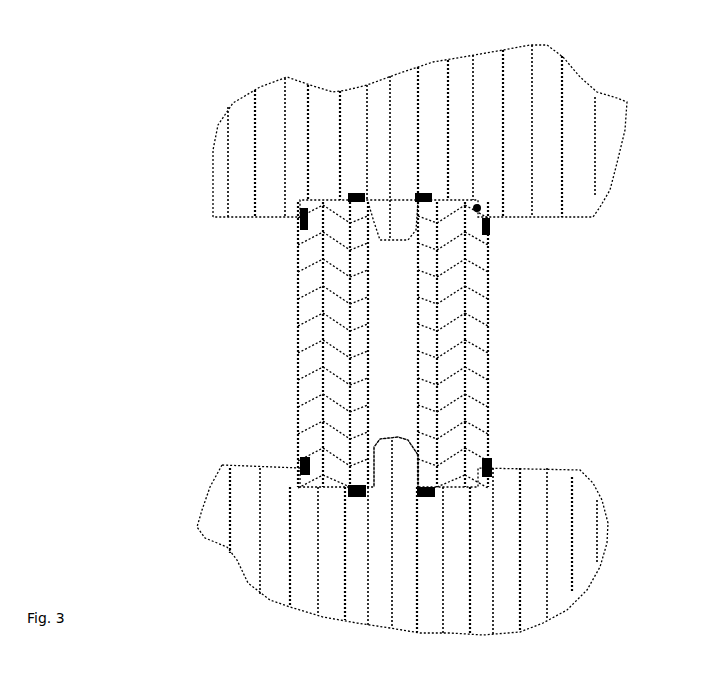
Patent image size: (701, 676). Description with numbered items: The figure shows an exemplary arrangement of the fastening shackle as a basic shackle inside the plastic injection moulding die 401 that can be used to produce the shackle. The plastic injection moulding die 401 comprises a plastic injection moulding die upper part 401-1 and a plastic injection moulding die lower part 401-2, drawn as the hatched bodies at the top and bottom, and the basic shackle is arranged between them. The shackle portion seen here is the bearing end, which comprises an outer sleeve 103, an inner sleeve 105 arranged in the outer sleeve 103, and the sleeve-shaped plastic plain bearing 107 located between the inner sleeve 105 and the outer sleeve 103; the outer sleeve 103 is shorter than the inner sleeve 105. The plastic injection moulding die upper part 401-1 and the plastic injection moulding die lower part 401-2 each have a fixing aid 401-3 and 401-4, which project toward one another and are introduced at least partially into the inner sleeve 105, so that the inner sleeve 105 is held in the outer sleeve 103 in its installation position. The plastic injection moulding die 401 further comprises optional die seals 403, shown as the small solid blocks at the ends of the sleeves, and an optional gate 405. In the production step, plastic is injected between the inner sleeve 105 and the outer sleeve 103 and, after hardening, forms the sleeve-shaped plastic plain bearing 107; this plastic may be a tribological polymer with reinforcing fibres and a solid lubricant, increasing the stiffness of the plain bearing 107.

The plastic injection moulding die 401 is at (188, 136).
The plastic injection moulding die upper part 401-1 is at (572, 98).
The plastic injection moulding die lower part 401-2 is at (585, 523).
The fixing aid 401-3 is at (382, 238).
The fixing aid 401-4 is at (398, 455).
The outer sleeve 103 is at (477, 378).
The inner sleeve 105 is at (423, 322).
The sleeve-shaped plastic plain bearing 107 is at (447, 338).
The die seals 403 is at (350, 198).
The gate 405 is at (480, 209).